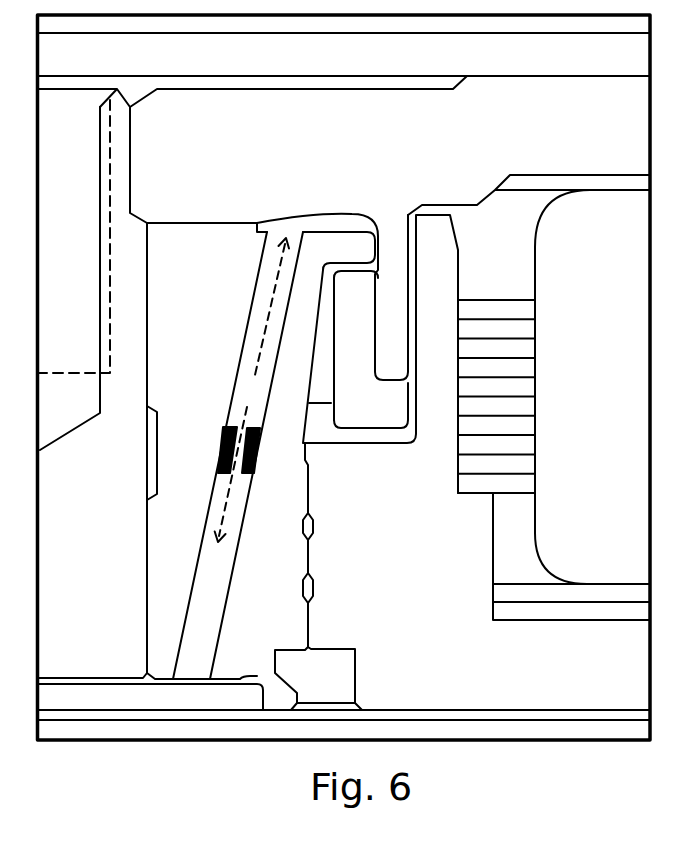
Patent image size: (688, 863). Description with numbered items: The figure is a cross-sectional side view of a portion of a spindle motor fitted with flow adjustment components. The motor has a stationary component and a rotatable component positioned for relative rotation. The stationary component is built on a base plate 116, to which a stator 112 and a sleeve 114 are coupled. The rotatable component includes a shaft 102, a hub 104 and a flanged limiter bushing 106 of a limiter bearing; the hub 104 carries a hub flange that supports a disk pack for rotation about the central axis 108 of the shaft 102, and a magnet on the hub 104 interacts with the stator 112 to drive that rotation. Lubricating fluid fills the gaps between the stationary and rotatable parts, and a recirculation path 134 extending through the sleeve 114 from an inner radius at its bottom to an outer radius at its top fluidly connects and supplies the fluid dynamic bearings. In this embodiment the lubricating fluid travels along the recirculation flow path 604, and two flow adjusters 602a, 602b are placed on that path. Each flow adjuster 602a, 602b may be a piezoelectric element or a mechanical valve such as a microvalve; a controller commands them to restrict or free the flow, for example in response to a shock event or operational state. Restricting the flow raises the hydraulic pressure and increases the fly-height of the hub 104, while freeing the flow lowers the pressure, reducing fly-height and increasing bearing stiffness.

The shaft 102 is at (115, 622).
The hub 104 is at (630, 137).
The limiter bushing 106 is at (392, 414).
The central axis 108 is at (42, 232).
The stator 112 is at (617, 407).
The sleeve 114 is at (220, 271).
The base plate 116 is at (593, 684).
The recirculation path 134 is at (203, 618).
The flow adjuster 602a is at (221, 448).
The flow adjuster 602b is at (257, 453).
The recirculation flow path 604 is at (252, 390).